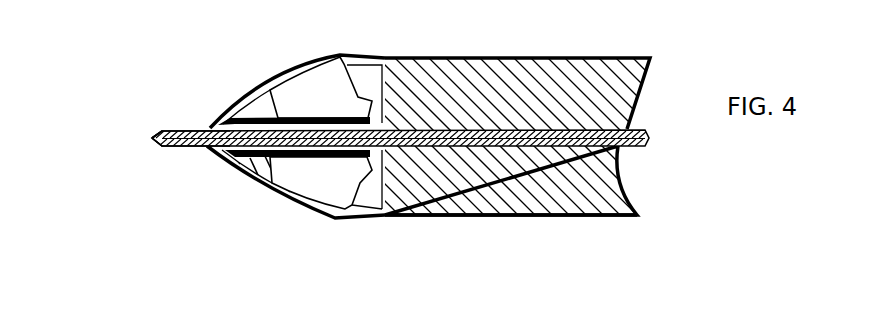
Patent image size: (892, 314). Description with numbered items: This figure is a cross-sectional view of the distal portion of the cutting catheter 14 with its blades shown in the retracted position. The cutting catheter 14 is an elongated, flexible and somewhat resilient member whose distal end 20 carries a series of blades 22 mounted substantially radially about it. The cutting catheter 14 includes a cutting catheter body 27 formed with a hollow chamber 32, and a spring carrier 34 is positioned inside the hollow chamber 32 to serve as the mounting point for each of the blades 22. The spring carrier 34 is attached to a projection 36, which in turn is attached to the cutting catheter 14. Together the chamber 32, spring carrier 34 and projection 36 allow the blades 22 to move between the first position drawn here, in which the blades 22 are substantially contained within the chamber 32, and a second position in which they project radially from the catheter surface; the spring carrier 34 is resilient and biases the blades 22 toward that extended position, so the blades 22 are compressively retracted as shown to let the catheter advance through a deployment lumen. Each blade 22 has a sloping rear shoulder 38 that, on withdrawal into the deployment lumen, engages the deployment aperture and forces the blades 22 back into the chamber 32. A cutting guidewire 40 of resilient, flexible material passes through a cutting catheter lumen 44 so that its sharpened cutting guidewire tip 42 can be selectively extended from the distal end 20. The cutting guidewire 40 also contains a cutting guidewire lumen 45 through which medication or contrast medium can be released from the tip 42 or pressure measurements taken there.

The cutting catheter 14 is at (502, 47).
The distal end of the cutting catheter 20 is at (245, 100).
The blades 22 is at (302, 88).
The cutting catheter body 27 is at (460, 198).
The hollow chamber 32 is at (255, 170).
The spring carrier 34 is at (241, 168).
The projection 36 is at (332, 153).
The sloping rear shoulder 38 is at (372, 76).
The cutting guidewire 40 is at (521, 134).
The cutting guidewire tip 42 is at (157, 145).
The cutting catheter lumen 44 is at (563, 132).
The cutting guidewire lumen 45 is at (175, 130).